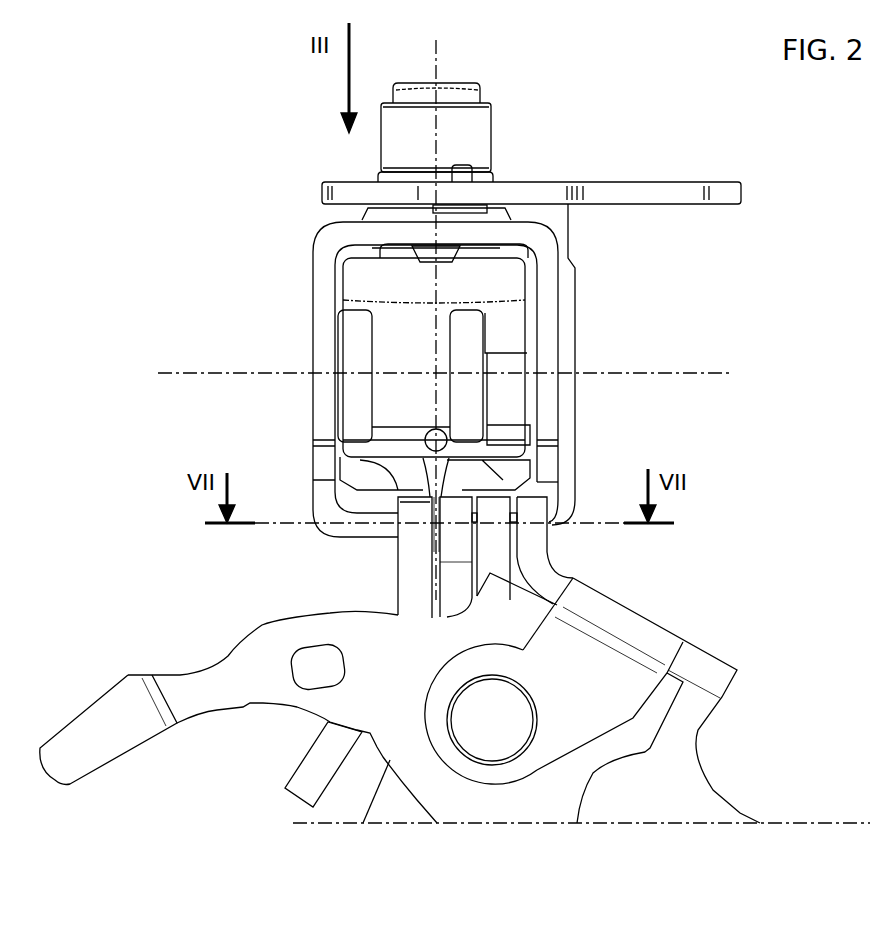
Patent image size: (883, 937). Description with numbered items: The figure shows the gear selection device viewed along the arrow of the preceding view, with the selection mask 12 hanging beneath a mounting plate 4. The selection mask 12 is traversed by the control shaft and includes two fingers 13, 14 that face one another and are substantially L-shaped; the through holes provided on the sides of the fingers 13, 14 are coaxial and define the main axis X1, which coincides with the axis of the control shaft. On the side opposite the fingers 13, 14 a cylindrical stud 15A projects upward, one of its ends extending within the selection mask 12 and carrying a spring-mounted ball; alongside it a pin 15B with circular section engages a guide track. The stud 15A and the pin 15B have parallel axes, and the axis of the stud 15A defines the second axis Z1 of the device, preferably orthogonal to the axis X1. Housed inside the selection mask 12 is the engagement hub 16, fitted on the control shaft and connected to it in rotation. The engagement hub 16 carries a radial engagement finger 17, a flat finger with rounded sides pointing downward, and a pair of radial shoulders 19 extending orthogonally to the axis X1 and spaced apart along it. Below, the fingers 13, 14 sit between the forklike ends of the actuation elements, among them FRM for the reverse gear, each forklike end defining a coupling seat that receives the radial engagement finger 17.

The mounting plate 4 is at (640, 174).
The selection mask 12 is at (566, 343).
The finger 13 is at (325, 493).
The finger 14 is at (547, 467).
The cylindrical stud 15A is at (480, 132).
The pin 15B is at (463, 166).
The engagement hub 16 is at (364, 285).
The radial engagement finger 17 is at (435, 468).
The radial shoulders 19 is at (472, 350).
The second axis Z1 is at (437, 57).
The main axis X1 is at (635, 374).
The fourth forklike actuation element FRM is at (420, 542).